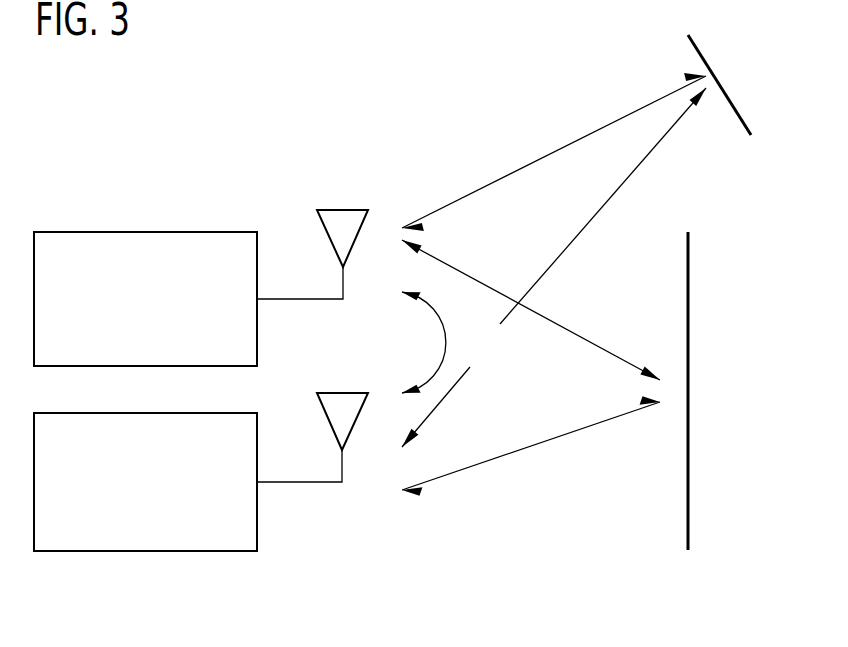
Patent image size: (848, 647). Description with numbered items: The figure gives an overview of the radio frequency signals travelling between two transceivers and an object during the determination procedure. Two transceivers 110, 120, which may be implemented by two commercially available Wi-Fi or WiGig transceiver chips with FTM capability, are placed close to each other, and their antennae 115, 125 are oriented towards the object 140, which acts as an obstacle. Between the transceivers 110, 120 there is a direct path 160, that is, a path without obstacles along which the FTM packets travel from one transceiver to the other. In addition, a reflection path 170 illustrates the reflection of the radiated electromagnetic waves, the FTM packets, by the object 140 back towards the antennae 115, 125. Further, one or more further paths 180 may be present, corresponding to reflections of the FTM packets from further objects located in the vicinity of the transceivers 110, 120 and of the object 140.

The transceiver 110 is at (145, 232).
The antenna 115 is at (342, 210).
The transceiver 120 is at (257, 513).
The antenna 125 is at (342, 393).
The object 140 is at (689, 390).
The direct path 160 is at (502, 305).
The reflection path 170 is at (525, 505).
The further paths 180 is at (728, 220).